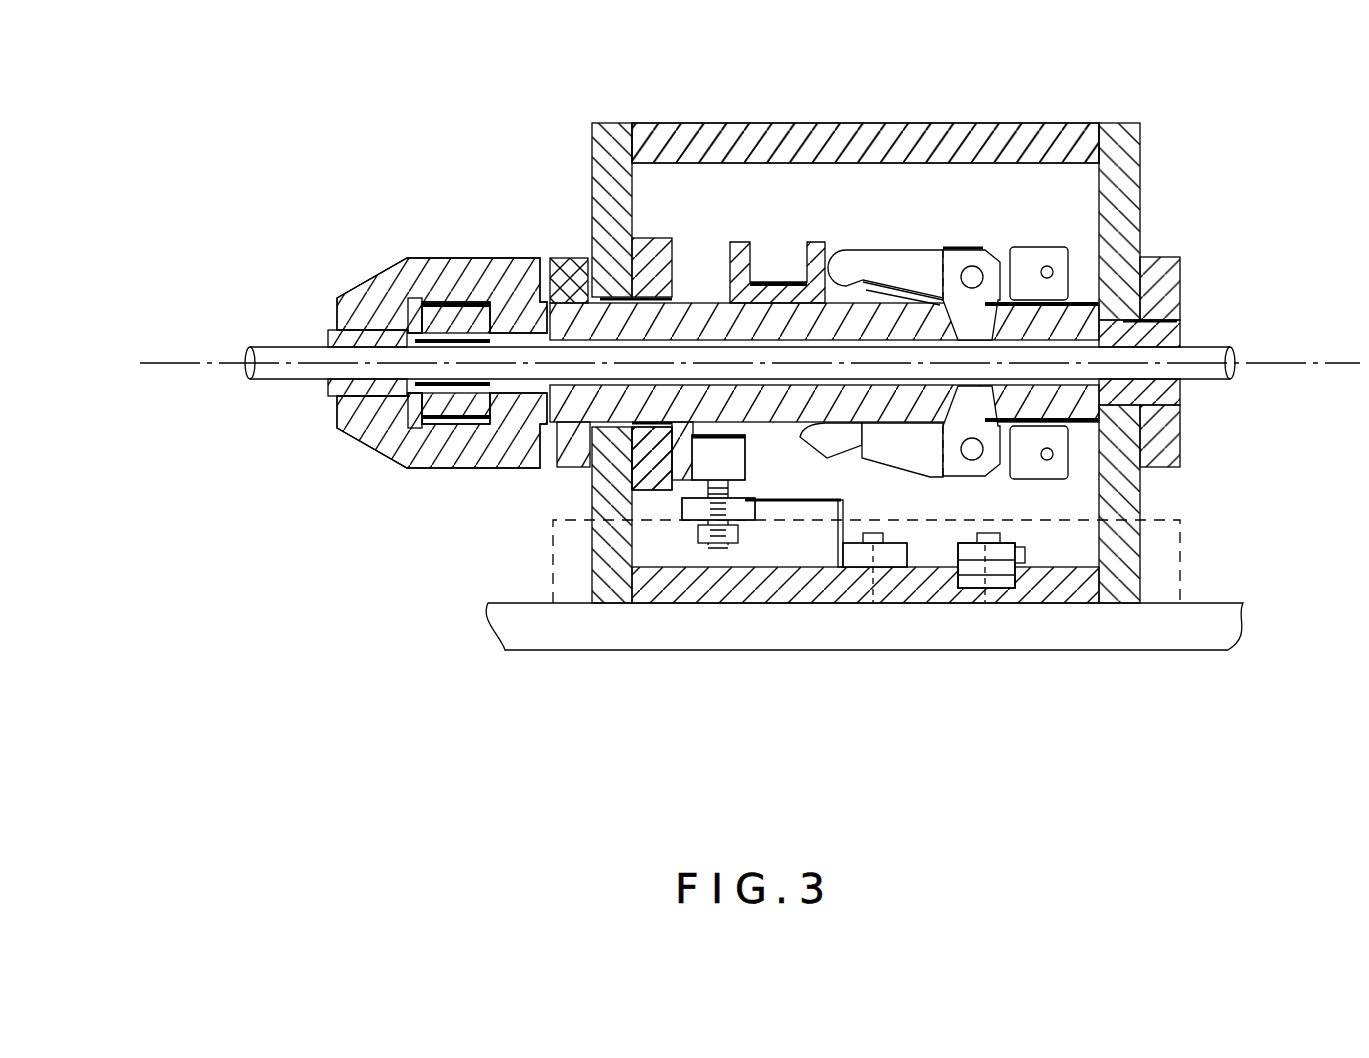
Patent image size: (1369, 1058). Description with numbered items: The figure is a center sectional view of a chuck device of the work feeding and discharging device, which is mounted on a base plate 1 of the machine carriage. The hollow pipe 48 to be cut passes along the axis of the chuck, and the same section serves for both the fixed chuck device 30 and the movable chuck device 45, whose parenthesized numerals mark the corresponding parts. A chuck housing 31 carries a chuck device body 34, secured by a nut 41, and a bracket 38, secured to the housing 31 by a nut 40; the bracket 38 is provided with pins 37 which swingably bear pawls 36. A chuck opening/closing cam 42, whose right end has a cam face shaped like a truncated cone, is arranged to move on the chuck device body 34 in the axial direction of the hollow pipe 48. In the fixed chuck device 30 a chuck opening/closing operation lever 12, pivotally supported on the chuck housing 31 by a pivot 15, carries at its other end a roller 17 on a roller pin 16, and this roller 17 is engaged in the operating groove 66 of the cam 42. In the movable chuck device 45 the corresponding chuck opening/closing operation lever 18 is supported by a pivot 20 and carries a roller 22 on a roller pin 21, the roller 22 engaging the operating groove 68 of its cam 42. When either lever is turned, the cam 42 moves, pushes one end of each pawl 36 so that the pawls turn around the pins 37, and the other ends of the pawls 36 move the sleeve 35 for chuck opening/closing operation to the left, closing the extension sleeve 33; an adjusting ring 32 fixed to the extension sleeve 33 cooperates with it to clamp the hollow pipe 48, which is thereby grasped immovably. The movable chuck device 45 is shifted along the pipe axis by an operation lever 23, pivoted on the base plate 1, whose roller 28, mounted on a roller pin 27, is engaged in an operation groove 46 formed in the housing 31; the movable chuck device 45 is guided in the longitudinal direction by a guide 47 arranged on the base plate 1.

The base plate 1 is at (1200, 637).
The chuck opening/closing operation lever 12 is at (893, 557).
The chuck opening/closing operation lever 18 is at (884, 642).
The pivot 15 is at (855, 550).
The pivot 20 is at (804, 601).
The roller pin 16 is at (720, 545).
The roller pin 21 is at (722, 569).
The roller 17 is at (695, 452).
The roller 22 is at (565, 565).
The operation lever 23 is at (1045, 583).
The roller pin 27 is at (973, 590).
The roller 28 is at (997, 587).
The fixed chuck device 30 is at (536, 487).
The chuck housing 31 is at (653, 600).
The adjusting ring 32 is at (417, 460).
The extension sleeve 33 is at (353, 330).
The chuck device body 34 is at (612, 419).
The sleeve for chuck opening/closing operation 35 is at (580, 333).
The pawls 36 is at (913, 262).
The pins 37 is at (972, 266).
The bracket 38 is at (1032, 470).
The nut 40 is at (1181, 270).
The nut 41 is at (640, 467).
The chuck opening/closing cam 42 is at (840, 287).
The movable chuck device 45 is at (442, 418).
The operation groove 46 is at (1020, 560).
The guide 47 is at (1163, 578).
The hollow pipe 48 is at (285, 381).
The operating groove 66 is at (778, 248).
The operating groove 68 is at (865, 107).